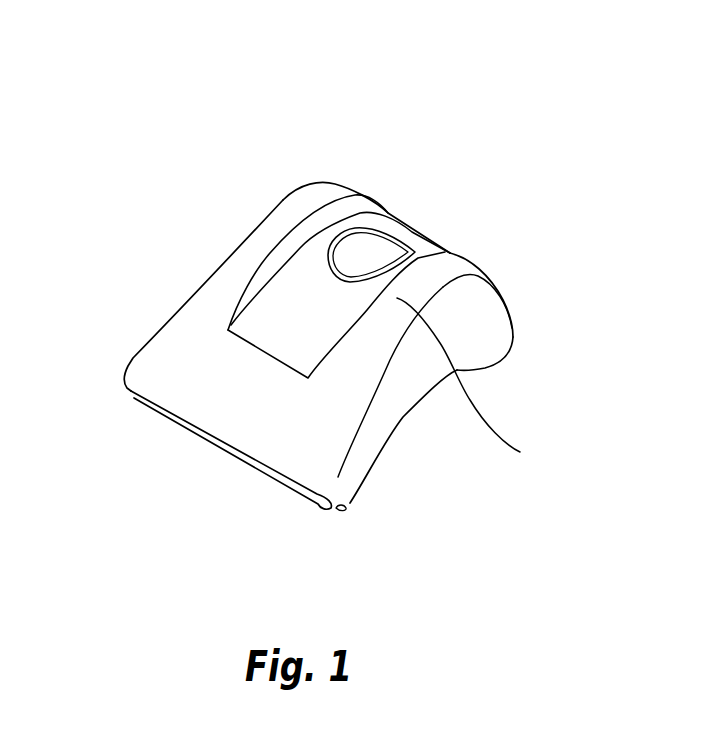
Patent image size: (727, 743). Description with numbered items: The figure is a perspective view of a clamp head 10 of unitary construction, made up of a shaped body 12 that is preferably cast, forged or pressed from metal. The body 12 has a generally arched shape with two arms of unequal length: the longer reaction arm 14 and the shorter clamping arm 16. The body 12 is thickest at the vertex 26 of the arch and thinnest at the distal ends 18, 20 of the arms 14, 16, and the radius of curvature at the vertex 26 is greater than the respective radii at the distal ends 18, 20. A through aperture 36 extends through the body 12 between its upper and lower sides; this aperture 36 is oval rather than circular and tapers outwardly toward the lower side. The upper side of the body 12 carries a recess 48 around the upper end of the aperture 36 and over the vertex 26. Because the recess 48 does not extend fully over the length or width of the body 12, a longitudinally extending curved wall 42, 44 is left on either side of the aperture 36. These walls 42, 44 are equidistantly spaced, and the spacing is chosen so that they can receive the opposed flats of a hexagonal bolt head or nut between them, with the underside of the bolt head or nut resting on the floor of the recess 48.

The clamp head 10 is at (357, 105).
The shaped body 12 is at (207, 282).
The reaction arm 14 is at (198, 404).
The clamping arm 16 is at (487, 303).
The distal end of the reaction arm 18 is at (251, 467).
The distal end of the clamping arm 20 is at (505, 357).
The vertex 26 is at (332, 203).
The through aperture 36 is at (353, 250).
The longitudinally extending curved wall 42 is at (441, 382).
The longitudinally extending curved wall 44 is at (281, 217).
The recess 48 is at (318, 290).